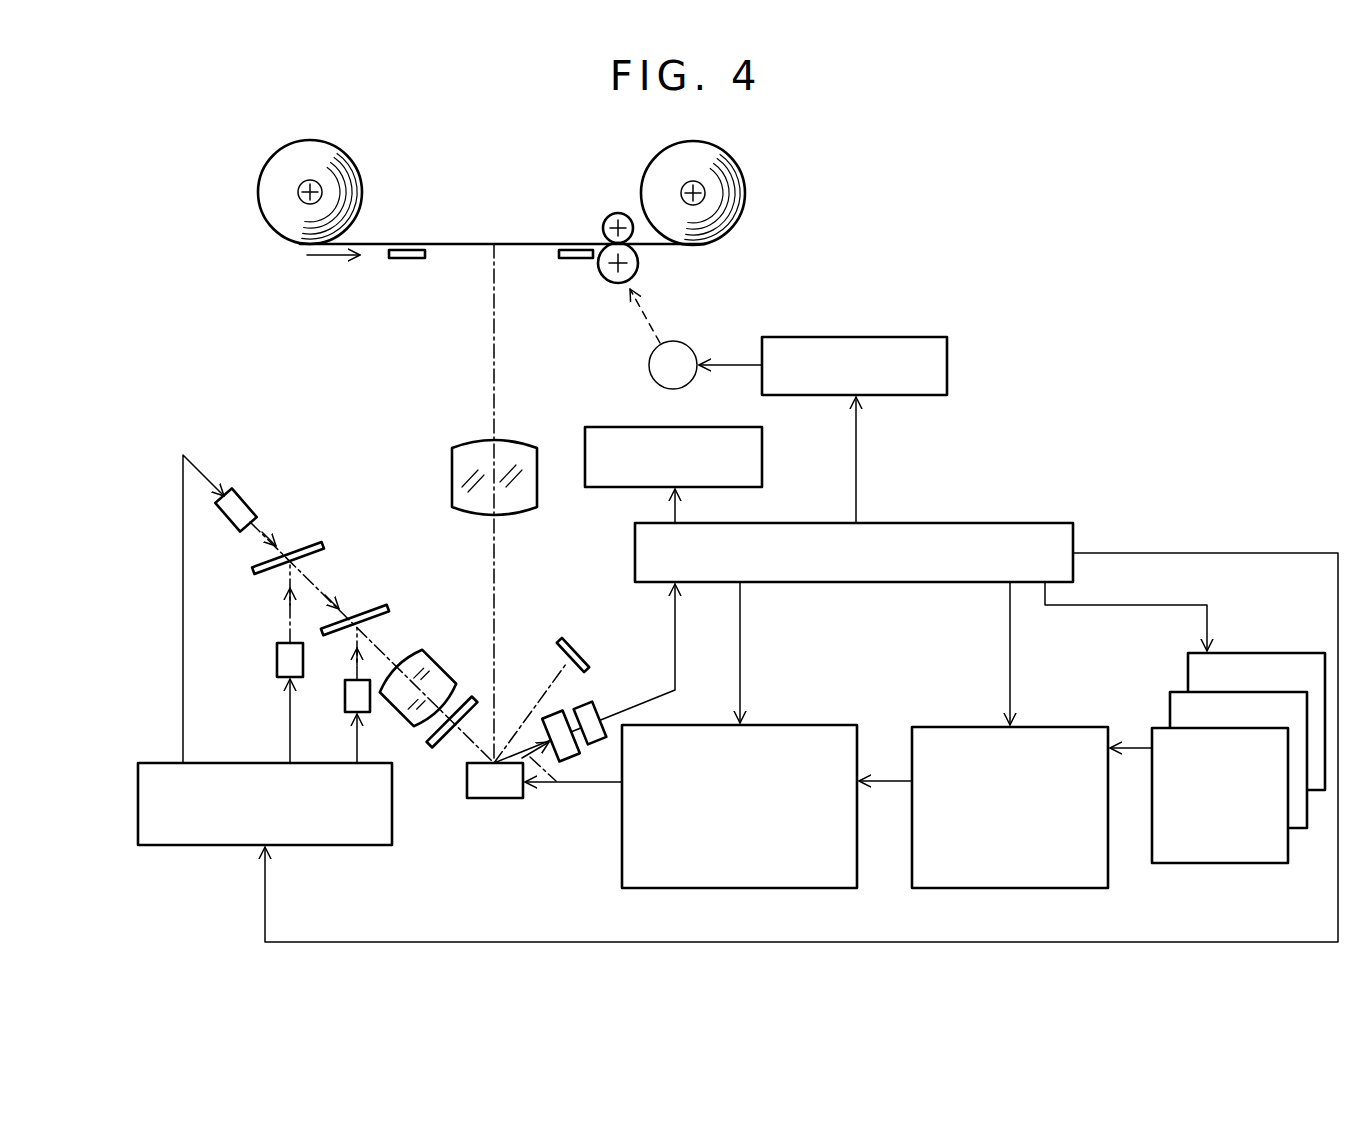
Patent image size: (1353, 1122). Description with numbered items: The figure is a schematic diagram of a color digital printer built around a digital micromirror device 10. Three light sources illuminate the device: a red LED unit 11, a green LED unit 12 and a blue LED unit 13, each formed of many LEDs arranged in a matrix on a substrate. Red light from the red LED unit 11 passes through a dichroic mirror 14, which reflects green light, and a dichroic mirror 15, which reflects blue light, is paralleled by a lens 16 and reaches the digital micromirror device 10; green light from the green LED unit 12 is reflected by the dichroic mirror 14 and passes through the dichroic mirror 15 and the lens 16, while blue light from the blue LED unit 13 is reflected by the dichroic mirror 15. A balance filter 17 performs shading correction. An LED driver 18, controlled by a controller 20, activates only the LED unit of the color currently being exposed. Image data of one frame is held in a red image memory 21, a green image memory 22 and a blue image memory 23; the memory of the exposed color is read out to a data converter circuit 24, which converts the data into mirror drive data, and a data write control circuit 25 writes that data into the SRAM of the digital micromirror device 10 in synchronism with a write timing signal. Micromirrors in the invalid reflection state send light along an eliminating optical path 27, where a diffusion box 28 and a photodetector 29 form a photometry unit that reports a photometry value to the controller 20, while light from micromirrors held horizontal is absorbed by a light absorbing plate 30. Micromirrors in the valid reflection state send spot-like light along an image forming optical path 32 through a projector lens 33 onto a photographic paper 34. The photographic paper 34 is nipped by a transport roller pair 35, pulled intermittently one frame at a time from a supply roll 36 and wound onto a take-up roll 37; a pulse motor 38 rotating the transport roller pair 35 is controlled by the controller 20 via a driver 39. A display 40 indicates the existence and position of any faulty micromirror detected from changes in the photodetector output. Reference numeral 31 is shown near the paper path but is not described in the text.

The digital micromirror device 10 is at (497, 799).
The red LED unit 11 is at (238, 491).
The green LED unit 12 is at (276, 655).
The blue LED unit 13 is at (346, 700).
The dichroic mirror 14 is at (312, 545).
The dichroic mirror 15 is at (377, 607).
The lens 16 is at (430, 654).
The balance filter 17 is at (440, 746).
The LED driver 18 is at (330, 846).
The controller 20 is at (958, 523).
The red image memory 21 is at (1225, 863).
The green image memory 22 is at (1174, 692).
The blue image memory 23 is at (1275, 653).
The data converter circuit 24 is at (1068, 727).
The data write control circuit 25 is at (826, 725).
The eliminating optical path 27 is at (533, 750).
The diffusion box 28 is at (553, 716).
The photodetector 29 is at (600, 705).
The light absorbing plate 30 is at (568, 641).
The film guide plates 31 is at (405, 260).
The image forming optical path 32 is at (493, 368).
The projector lens 33 is at (528, 440).
The photographic paper 34 is at (488, 243).
The transport roller pair 35 is at (620, 285).
The supply roll 36 is at (337, 150).
The take-up roll 37 is at (728, 150).
The pulse motor 38 is at (676, 341).
The driver 39 is at (855, 337).
The display 40 is at (763, 448).